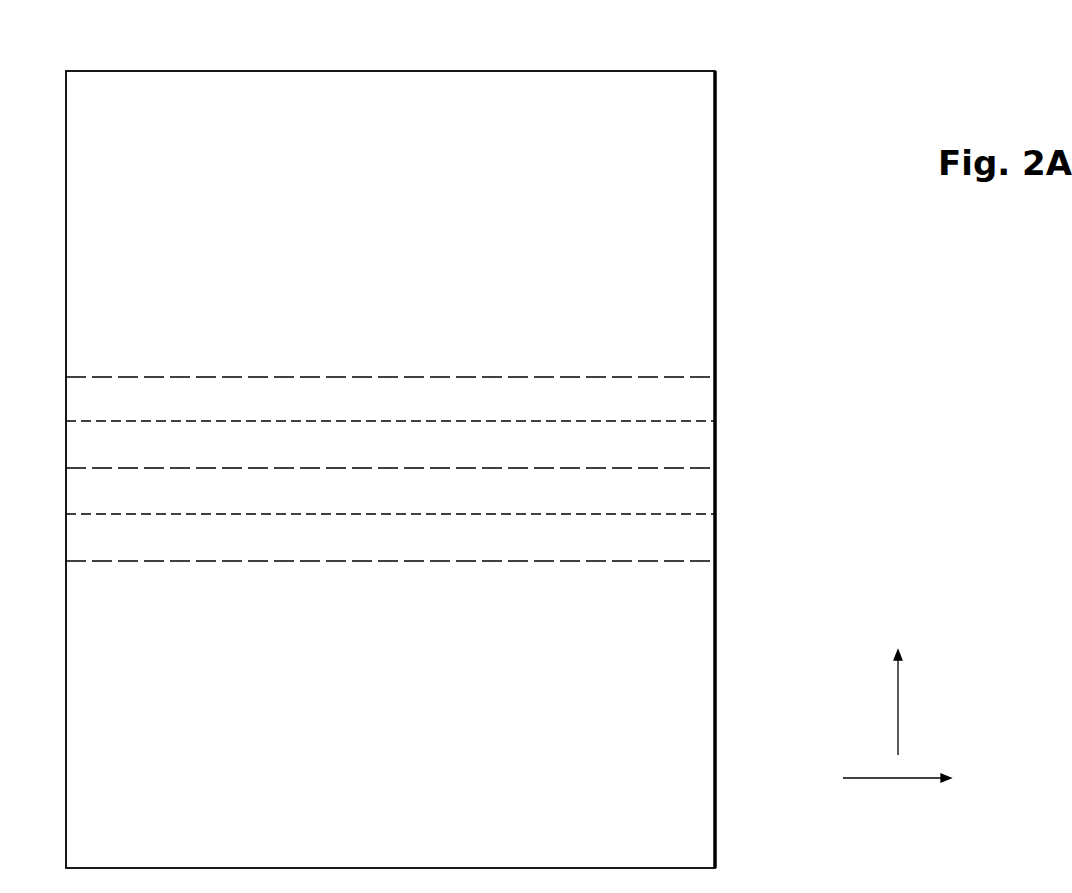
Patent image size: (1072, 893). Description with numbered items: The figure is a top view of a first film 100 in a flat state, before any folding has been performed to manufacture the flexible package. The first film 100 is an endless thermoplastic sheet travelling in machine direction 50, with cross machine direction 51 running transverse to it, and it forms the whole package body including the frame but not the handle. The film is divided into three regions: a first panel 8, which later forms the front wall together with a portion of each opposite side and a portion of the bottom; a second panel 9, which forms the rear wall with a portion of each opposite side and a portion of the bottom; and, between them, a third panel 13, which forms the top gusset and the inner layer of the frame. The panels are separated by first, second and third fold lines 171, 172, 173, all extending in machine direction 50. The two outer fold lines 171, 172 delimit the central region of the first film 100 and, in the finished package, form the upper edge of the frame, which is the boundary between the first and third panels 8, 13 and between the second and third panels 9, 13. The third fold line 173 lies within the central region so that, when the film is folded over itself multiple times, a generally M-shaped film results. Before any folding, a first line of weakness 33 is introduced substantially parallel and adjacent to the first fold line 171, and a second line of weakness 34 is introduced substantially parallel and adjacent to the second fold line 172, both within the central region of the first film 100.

The first film 100 is at (690, 90).
The second panel 9 is at (726, 72).
The third panel 13 is at (726, 378).
The first panel 8 is at (726, 562).
The second fold line 172 is at (486, 377).
The third fold line 173 is at (437, 468).
The first fold line 171 is at (517, 562).
The first line of weakness 33 is at (285, 421).
The second line of weakness 34 is at (256, 514).
The machine direction 50 is at (897, 809).
The cross machine direction 51 is at (930, 702).